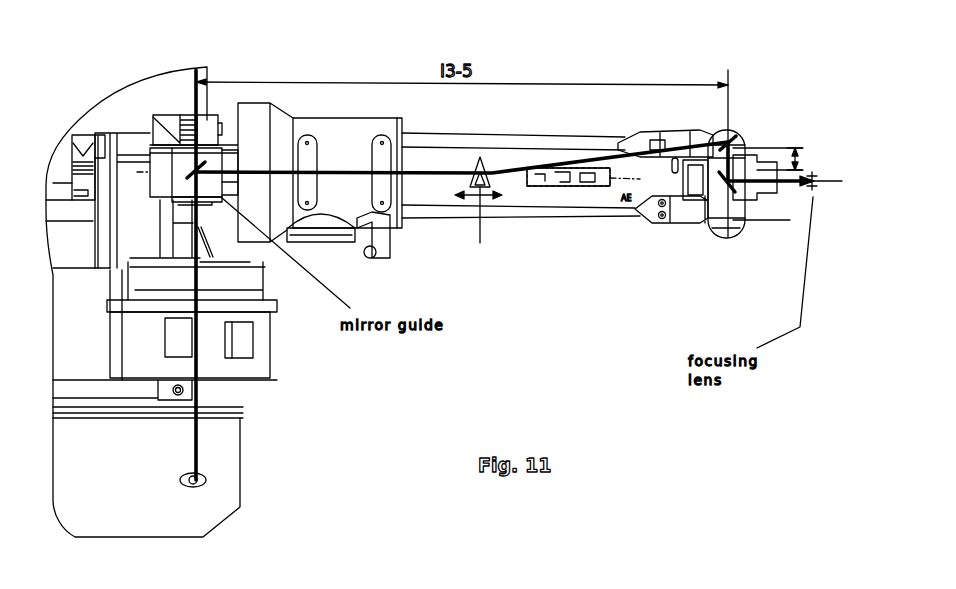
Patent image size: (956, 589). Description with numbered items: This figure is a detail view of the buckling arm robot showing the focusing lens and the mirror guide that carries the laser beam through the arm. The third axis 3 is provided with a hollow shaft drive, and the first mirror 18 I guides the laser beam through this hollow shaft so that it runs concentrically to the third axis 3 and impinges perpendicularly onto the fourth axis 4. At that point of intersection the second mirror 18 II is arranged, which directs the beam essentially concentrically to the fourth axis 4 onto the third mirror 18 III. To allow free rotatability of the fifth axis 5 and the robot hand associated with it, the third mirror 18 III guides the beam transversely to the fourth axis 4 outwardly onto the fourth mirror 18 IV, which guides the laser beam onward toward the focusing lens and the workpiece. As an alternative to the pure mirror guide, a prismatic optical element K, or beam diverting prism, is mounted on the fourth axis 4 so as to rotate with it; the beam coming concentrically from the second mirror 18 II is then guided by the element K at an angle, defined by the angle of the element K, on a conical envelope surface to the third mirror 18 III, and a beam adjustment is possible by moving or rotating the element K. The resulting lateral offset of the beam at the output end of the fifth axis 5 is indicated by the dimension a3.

The third axis 3 is at (197, 362).
The fourth axis 4 is at (629, 176).
The fifth axis 5 is at (727, 230).
The first mirror 18 I is at (207, 482).
The second mirror 18 II is at (200, 168).
The third mirror 18 III is at (735, 143).
The fourth mirror 18 IV is at (727, 177).
The prismatic optical element K is at (478, 211).
The offset distance a3 is at (797, 163).